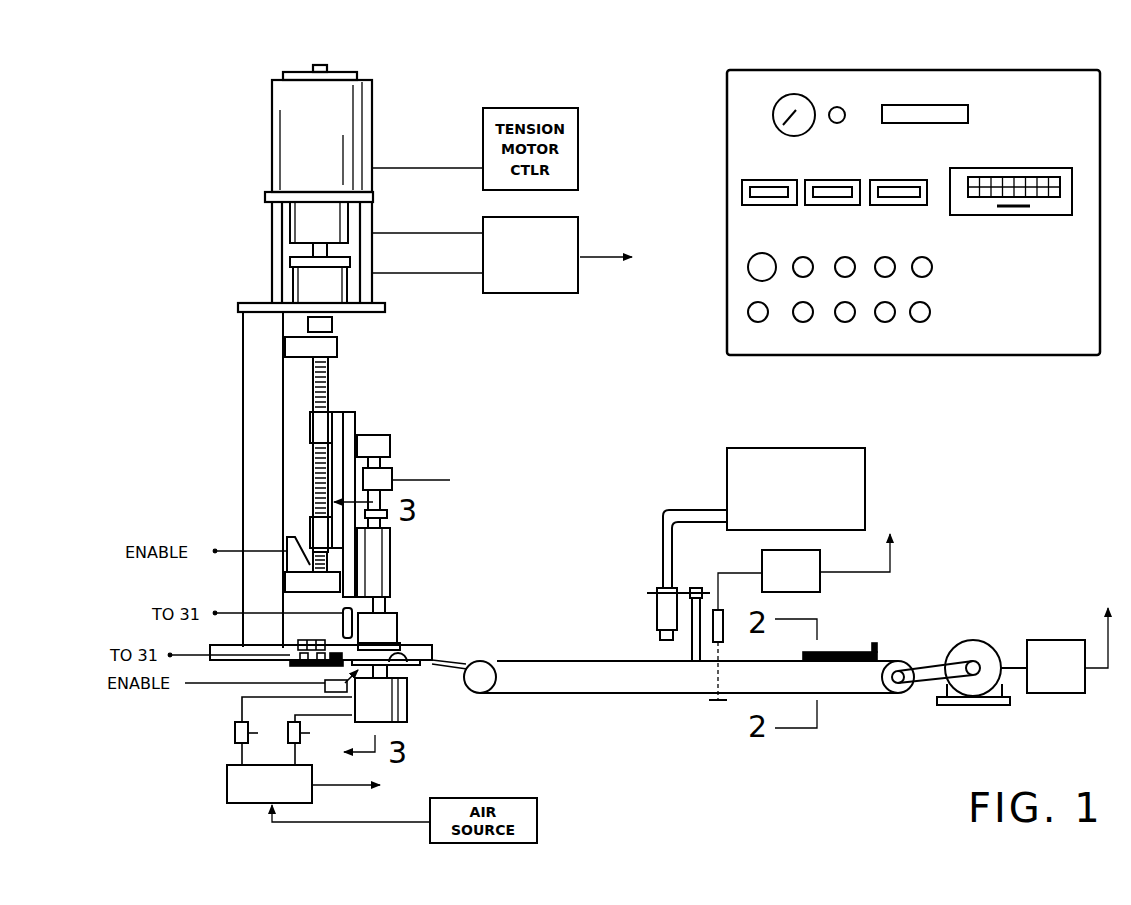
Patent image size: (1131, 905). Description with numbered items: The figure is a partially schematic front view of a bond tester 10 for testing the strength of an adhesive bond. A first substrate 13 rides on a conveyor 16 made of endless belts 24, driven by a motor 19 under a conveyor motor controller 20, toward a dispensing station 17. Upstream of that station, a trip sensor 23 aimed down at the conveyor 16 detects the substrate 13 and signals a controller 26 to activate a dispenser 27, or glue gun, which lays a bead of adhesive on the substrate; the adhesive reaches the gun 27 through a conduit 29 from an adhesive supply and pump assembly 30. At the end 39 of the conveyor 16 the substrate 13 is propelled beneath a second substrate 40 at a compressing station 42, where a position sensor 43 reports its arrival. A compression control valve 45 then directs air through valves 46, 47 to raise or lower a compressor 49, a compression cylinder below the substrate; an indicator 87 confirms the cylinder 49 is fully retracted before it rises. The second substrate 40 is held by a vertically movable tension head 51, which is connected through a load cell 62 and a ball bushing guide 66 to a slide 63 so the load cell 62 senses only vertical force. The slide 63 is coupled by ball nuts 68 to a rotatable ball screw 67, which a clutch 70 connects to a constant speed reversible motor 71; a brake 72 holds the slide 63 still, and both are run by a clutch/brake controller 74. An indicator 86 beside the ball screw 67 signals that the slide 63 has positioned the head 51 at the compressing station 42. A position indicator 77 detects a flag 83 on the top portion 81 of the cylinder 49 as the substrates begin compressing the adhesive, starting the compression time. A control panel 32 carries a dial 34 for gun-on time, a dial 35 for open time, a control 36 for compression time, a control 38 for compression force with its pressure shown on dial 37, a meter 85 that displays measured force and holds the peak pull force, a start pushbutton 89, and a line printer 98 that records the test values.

The bond tester 10 is at (105, 568).
The first substrate 13 is at (842, 651).
The conveyor 16 is at (606, 695).
The dispensing station 17 is at (644, 621).
The motor 19 is at (985, 641).
The conveyor motor controller 20 is at (1046, 682).
The trip sensor 23 is at (724, 620).
The endless belts 24 is at (563, 661).
The controller 26 is at (781, 584).
The dispenser 27 is at (657, 600).
The conduit 29 is at (666, 511).
The adhesive supply and pump assembly 30 is at (790, 447).
The control panel 32 is at (1040, 358).
The dial 34 is at (786, 205).
The rotatable dial 35 is at (848, 205).
The rotatable control 36 is at (913, 205).
The dial 37 is at (775, 122).
The rotatable control 38 is at (844, 111).
The end of the conveyor 39 is at (480, 668).
The second substrate 40 is at (400, 640).
The compressing station 42 is at (437, 649).
The position sensor 43 is at (342, 621).
The compression control valve 45 is at (330, 784).
The valve 46 is at (235, 733).
The valve 47 is at (288, 735).
The compressor 49 is at (407, 700).
The tension head 51 is at (398, 626).
The load cell 62 is at (393, 478).
The slide 63 is at (356, 421).
The ball bushing guide 66 is at (392, 566).
The ball screw 67 is at (330, 400).
The ball nuts 68 is at (310, 426).
The clutch 70 is at (292, 223).
The constant speed reversible motor 71 is at (292, 150).
The brake 72 is at (294, 287).
The clutch/brake controller 74 is at (582, 218).
The position indicator 77 is at (300, 645).
The top portion 81 is at (413, 663).
The flag 83 is at (290, 663).
The meter 85 is at (968, 115).
The indicator 86 is at (287, 566).
The indicator 87 is at (325, 683).
The start pushbutton 89 is at (933, 271).
The line printer 98 is at (1030, 218).